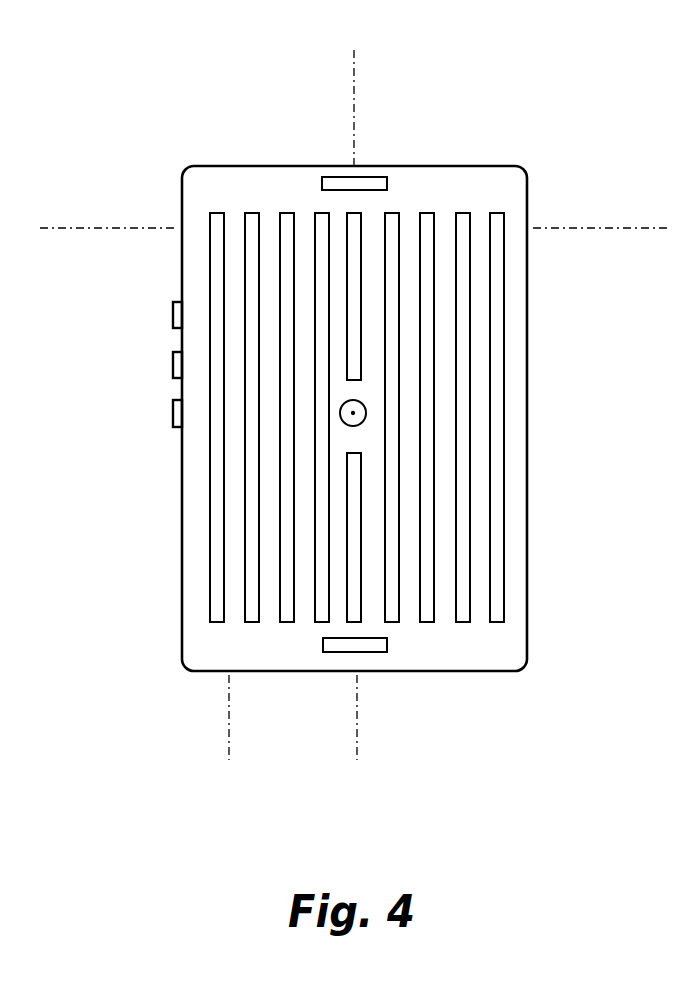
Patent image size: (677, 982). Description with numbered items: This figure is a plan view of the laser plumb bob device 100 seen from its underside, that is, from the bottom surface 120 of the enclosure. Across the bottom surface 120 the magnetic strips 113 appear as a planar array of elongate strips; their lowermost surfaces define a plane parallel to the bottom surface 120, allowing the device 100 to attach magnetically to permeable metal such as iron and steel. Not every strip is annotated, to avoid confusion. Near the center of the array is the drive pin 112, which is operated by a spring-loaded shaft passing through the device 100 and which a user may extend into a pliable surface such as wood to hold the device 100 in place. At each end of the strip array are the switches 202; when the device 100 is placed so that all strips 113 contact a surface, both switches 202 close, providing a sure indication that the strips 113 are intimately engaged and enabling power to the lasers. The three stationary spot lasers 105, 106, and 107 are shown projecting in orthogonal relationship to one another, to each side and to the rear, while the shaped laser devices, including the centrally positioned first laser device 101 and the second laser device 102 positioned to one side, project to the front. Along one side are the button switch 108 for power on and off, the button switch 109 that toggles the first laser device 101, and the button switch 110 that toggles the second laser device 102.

The laser plumb bob device 100 is at (381, 108).
The first laser device 101 is at (352, 680).
The second laser device 102 is at (222, 680).
The stationary spot laser 105 is at (176, 226).
The stationary spot laser 106 is at (535, 226).
The stationary spot laser 107 is at (350, 165).
The button switch 108 is at (172, 312).
The button switch 109 is at (172, 365).
The button switch 110 is at (172, 418).
The drive pin 112 is at (364, 403).
The magnetic strips 113 is at (500, 497).
The bottom surface 120 is at (268, 660).
The switches 202 is at (367, 166).